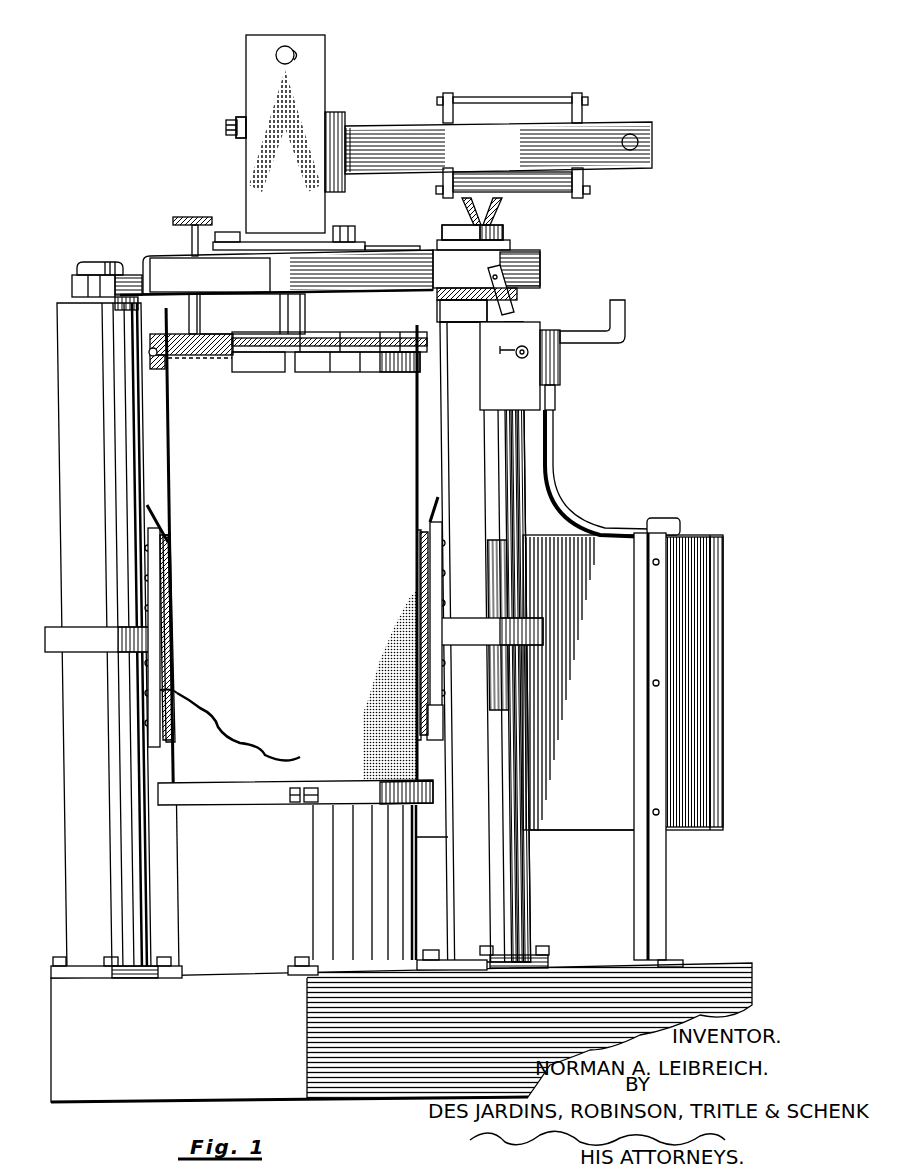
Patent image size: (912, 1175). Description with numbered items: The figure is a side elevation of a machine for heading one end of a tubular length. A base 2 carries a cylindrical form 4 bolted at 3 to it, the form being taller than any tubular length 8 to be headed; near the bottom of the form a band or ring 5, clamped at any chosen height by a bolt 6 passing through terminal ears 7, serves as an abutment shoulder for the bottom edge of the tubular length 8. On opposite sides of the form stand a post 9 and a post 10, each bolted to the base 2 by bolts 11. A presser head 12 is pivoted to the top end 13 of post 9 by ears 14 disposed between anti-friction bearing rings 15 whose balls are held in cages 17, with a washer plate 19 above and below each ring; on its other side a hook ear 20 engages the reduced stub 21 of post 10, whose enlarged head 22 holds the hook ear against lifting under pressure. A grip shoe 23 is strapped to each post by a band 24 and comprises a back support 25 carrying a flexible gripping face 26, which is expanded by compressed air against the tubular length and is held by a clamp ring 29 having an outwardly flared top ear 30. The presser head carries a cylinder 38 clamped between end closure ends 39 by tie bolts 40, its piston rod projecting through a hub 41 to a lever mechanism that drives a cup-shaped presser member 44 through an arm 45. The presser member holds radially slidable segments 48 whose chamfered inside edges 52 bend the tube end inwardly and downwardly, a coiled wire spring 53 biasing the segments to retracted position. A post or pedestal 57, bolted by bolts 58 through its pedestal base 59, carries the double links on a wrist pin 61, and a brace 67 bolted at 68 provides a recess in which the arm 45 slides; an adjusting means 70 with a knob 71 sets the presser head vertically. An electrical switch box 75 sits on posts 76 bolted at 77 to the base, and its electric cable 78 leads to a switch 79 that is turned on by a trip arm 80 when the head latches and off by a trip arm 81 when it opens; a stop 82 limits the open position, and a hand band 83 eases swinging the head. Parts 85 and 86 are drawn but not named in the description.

The base 2 is at (88, 1085).
The bolts 3 is at (292, 957).
The cylindrical form 4 is at (390, 887).
The band or ring 5 is at (210, 805).
The bolt 6 is at (312, 788).
The terminal ears 7 is at (296, 805).
The tubular length 8 is at (186, 438).
The post 9 is at (500, 703).
The post 10 is at (72, 710).
The bolts 11 is at (57, 957).
The presser head 12 is at (234, 99).
The top end of post 13 is at (500, 225).
The ears 14 is at (376, 276).
The anti-friction bearing rings 15 is at (432, 295).
The cages 17 is at (455, 305).
The washer plate 19 is at (510, 245).
The hook ear 20 is at (140, 270).
The reduced stub 21 is at (72, 287).
The enlarged head 22 is at (97, 262).
The grip shoe 23 is at (168, 578).
The band 24 is at (40, 630).
The back support 25 is at (150, 558).
The flexible gripping face 26 is at (175, 638).
The clamp ring 29 is at (160, 690).
The outwardly flared top ear 30 is at (160, 510).
The cylinder 38 is at (470, 110).
The end closure ends 39 is at (583, 112).
The tie bolts 40 is at (545, 97).
The hub 41 is at (420, 124).
The presser member 44 is at (320, 332).
The arm 45 is at (280, 302).
The segments 48 is at (270, 362).
The chamfered inside edge 52 is at (165, 365).
The coiled wire spring 53 is at (355, 372).
The post or pedestal 57 is at (314, 62).
The bolts 58 is at (343, 226).
The pedestal base 59 is at (365, 242).
The wrist pin 61 is at (286, 48).
The brace 67 is at (238, 117).
The bolt 68 is at (226, 130).
The adjusting means 70 is at (189, 310).
The knob 71 is at (195, 217).
The electrical switch box 75 is at (700, 648).
The posts 76 is at (640, 628).
The bolts 77 is at (668, 955).
The electric cable 78 is at (560, 470).
The switch 79 is at (552, 358).
The trip arm 80 is at (512, 292).
The trip arm 81 is at (512, 370).
The stop 82 is at (625, 328).
The hand band 83 is at (165, 256).
The funnel 85 is at (466, 205).
The collar 86 is at (442, 234).